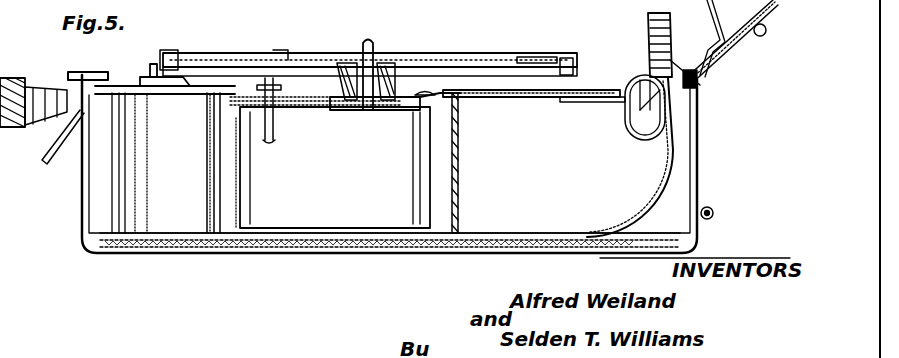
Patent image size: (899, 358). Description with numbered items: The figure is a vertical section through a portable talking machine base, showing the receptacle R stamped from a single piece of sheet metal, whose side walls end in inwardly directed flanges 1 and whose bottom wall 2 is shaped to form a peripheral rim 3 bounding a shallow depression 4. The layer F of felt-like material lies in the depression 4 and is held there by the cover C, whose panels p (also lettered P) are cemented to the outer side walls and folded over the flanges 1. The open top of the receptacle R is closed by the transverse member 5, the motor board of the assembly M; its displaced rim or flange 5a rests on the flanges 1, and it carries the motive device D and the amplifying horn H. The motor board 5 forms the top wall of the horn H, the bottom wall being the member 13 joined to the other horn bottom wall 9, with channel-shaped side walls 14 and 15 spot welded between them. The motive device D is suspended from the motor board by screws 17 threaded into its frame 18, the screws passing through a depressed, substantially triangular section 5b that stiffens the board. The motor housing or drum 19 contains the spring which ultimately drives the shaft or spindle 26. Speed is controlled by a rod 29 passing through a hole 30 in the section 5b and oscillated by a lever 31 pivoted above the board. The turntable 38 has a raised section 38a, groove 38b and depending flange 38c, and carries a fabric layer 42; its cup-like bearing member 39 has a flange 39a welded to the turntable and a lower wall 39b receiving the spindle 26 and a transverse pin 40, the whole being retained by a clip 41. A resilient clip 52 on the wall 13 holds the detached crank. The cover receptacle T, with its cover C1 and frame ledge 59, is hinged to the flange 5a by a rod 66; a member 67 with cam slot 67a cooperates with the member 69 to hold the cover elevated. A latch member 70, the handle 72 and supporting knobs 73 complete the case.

The flanges 1 is at (104, 90).
The bottom wall 2 is at (390, 247).
The peripheral rim 3 is at (113, 255).
The shallow depression 4 is at (630, 240).
The transverse member 5 is at (168, 112).
The rim or flange 5a is at (90, 72).
The depressed central section 5b is at (318, 110).
The horn bottom wall 9 is at (525, 6).
The bottom wall member 13 is at (157, 252).
The side wall 14 is at (112, 175).
The side wall 15 is at (208, 190).
The screws 17 is at (208, 110).
The frame 18 is at (435, 118).
The housing or drum 19 is at (337, 217).
The shaft or spindle 26 is at (370, 42).
The member or rod 29 is at (278, 128).
The hole or perforation 30 is at (275, 100).
The lever 31 is at (227, 83).
The turntable 38 is at (157, 58).
The circular raised section 38a is at (537, 56).
The circular groove 38b is at (560, 57).
The circular flange 38c is at (575, 70).
The cup-like bearing member 39 is at (388, 62).
The circular flange 39a is at (425, 90).
The lower wall 39b is at (345, 115).
The pin 40 is at (378, 112).
The clip 41 is at (347, 60).
The layer 42 is at (192, 52).
The clip or resilient member 52 is at (640, 115).
The ledge or rim 59 is at (725, 40).
The rod 66 is at (693, 80).
The member 67 is at (637, 100).
The cam slot 67a is at (655, 125).
The member 69 is at (650, 45).
The latch member 70 is at (48, 140).
The handle 72 is at (25, 80).
The metallic supporting knobs 73 is at (762, 37).
The cover C is at (233, 253).
The cover C1 is at (698, 78).
The motive device D is at (466, 187).
The layer of felt-like material F is at (278, 243).
The amplifying horn H is at (82, 225).
The assembly M is at (365, 210).
The panels P is at (110, 200).
The receptacle R is at (700, 172).
The receptacle T is at (725, 50).
The panels p is at (700, 150).